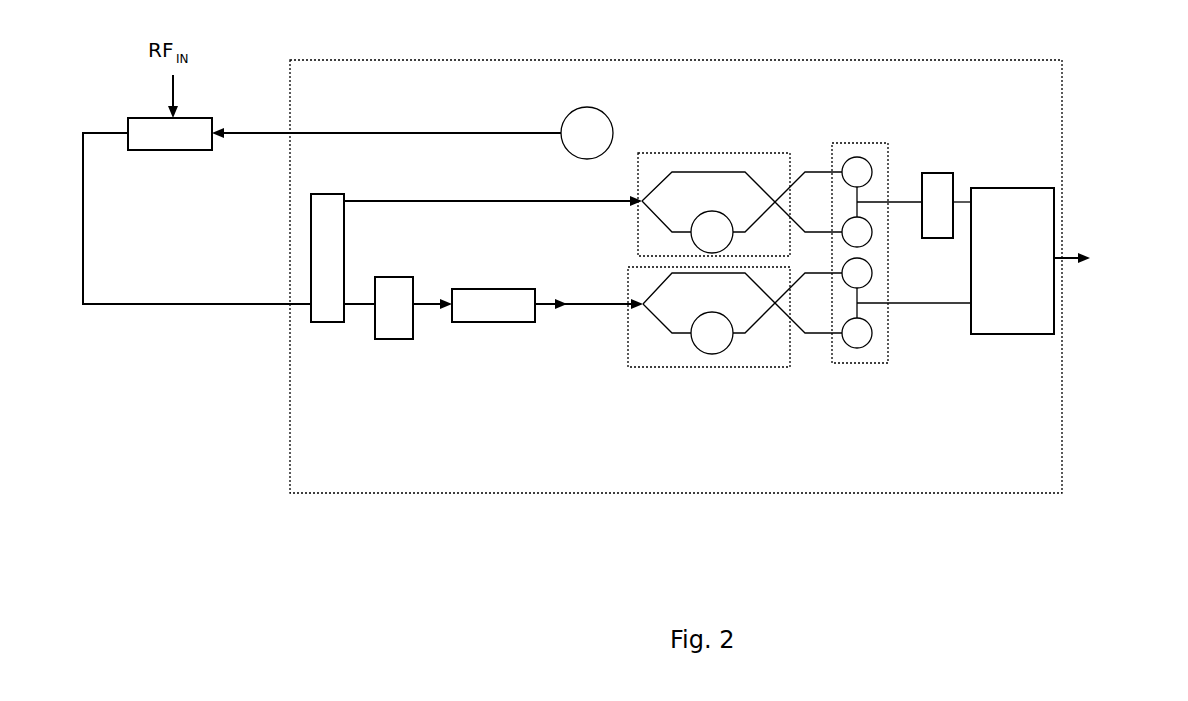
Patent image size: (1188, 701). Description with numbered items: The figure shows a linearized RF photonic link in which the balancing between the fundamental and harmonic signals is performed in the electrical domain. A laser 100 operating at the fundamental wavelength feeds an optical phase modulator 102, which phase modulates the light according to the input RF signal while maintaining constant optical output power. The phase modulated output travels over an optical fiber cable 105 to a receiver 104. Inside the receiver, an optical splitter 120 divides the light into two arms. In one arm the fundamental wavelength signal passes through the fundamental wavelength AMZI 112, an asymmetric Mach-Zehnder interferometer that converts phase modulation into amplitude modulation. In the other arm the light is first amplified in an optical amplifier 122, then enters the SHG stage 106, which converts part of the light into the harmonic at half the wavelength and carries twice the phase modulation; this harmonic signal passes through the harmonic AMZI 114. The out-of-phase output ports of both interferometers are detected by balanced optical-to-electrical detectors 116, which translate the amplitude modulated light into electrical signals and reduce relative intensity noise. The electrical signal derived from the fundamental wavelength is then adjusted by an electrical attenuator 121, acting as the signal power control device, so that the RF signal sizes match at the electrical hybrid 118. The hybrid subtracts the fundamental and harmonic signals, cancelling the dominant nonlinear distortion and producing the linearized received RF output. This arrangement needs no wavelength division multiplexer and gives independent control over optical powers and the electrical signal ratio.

The laser 100 is at (412, 119).
The optical phase modulator 102 is at (170, 150).
The receiver 104 is at (676, 294).
The optical fiber cable 105 is at (197, 237).
The SHG stage 106 is at (547, 334).
The fundamental wavelength AMZI 112 is at (740, 189).
The harmonic AMZI 114 is at (735, 333).
The optical-to-electrical detectors 116 is at (901, 272).
The electrical hybrid 118 is at (1060, 247).
The optical splitter 120 is at (476, 240).
The electrical attenuator 121 is at (946, 189).
The optical amplifier 122 is at (413, 326).